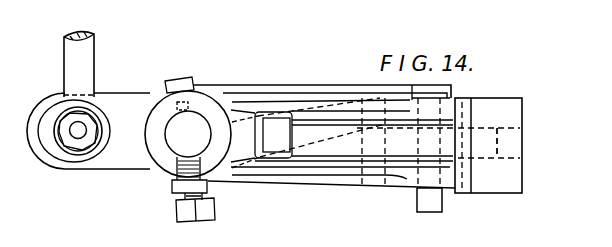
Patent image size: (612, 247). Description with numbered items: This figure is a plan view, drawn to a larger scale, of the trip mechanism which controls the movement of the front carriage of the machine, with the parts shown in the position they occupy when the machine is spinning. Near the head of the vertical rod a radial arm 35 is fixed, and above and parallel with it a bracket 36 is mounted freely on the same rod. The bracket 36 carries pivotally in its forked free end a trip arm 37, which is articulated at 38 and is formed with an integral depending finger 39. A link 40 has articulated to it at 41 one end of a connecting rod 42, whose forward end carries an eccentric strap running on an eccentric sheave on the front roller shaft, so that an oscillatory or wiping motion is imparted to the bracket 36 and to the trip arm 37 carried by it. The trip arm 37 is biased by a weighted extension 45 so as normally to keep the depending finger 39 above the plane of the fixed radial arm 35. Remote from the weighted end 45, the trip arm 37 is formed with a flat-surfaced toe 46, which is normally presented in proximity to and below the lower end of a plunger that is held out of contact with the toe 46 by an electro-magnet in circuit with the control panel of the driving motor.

The radial arm 35 is at (342, 90).
The bracket 36 is at (303, 168).
The trip arm 37 is at (402, 148).
The articulation 38 is at (418, 206).
The depending finger 39 is at (512, 152).
The link 40 is at (128, 107).
The articulation 41 is at (78, 137).
The connecting rod 42 is at (83, 68).
The weighted extension 45 is at (273, 140).
The flat-surfaced toe 46 is at (497, 110).